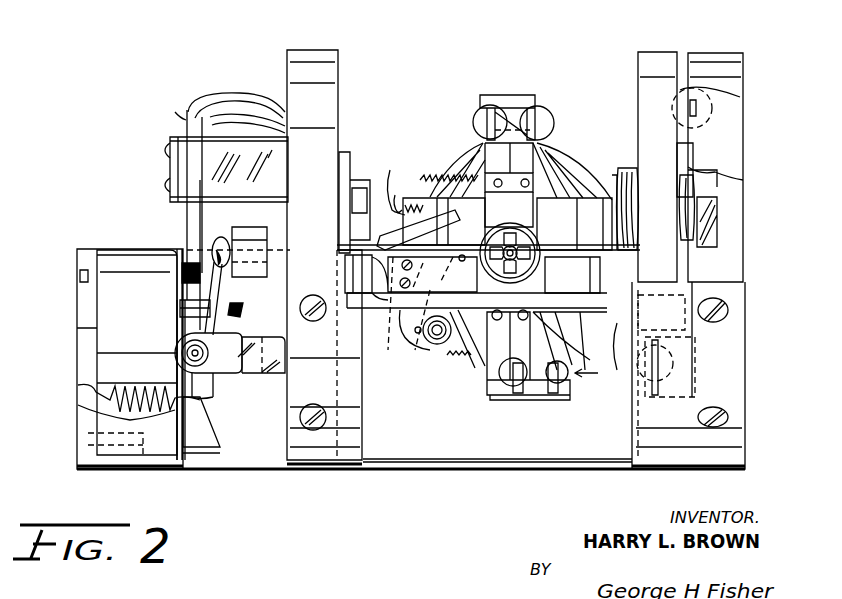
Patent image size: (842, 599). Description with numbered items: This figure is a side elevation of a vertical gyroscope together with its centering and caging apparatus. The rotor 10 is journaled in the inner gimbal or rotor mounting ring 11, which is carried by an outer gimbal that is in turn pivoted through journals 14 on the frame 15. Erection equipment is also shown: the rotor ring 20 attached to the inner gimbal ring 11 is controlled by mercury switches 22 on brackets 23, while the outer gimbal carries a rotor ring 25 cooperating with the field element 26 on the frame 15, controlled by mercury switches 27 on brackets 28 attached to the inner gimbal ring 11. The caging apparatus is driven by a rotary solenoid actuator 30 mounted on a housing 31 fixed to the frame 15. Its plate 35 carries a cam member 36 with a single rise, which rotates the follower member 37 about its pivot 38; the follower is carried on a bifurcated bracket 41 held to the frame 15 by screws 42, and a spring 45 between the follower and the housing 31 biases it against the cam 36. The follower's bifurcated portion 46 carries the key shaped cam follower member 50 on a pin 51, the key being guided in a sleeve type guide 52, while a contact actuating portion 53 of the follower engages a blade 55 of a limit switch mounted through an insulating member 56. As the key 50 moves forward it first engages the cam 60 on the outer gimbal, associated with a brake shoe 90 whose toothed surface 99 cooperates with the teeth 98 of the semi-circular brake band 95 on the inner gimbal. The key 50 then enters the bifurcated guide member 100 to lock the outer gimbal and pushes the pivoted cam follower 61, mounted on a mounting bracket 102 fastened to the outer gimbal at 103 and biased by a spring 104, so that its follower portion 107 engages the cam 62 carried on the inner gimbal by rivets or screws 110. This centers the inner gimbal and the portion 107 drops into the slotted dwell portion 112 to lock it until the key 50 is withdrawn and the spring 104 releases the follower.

The rotor 10 is at (588, 200).
The inner gimbal or rotor mounting ring 11 is at (513, 97).
The journals 14 is at (745, 245).
The frame 15 is at (732, 53).
The rotor ring 20 is at (578, 168).
The mercury switches 22 is at (742, 97).
The brackets 23 is at (677, 160).
The rotor ring 25 is at (647, 70).
The field element 26 is at (596, 354).
The mercury switches 27 is at (545, 115).
The brackets 28 is at (487, 397).
The actuator 30 is at (130, 249).
The housing 31 is at (77, 311).
The plate 35 is at (184, 251).
The cam member 36 is at (212, 440).
The follower member 37 is at (208, 383).
The pivot 38 is at (208, 353).
The bifurcated bracket 41 is at (260, 365).
The screws 42 is at (278, 203).
The spring 45 is at (156, 385).
The bifurcated portion 46 is at (221, 257).
The key shaped cam follower member 50 is at (187, 265).
The pin 51 is at (215, 261).
The sleeve type guide 52 is at (246, 230).
The contact actuating portion 53 is at (238, 322).
The blades of limit switch 55 is at (156, 173).
The insulating member 56 is at (186, 114).
The cam 60 is at (348, 180).
The cam follower 61 is at (362, 195).
The cam 62 is at (483, 194).
The brake shoe 90 is at (398, 185).
The brake band 95 is at (433, 182).
The teeth 98 is at (413, 178).
The toothed surface 99 is at (403, 205).
The bifurcated guide member 100 is at (348, 300).
The mounting bracket 102 is at (407, 289).
The attachment point of bracket 103 is at (390, 295).
The spring 104 is at (437, 344).
The follower portion 107 is at (431, 224).
The rivets or screws 110 is at (465, 362).
The dwell portion 112 is at (462, 255).